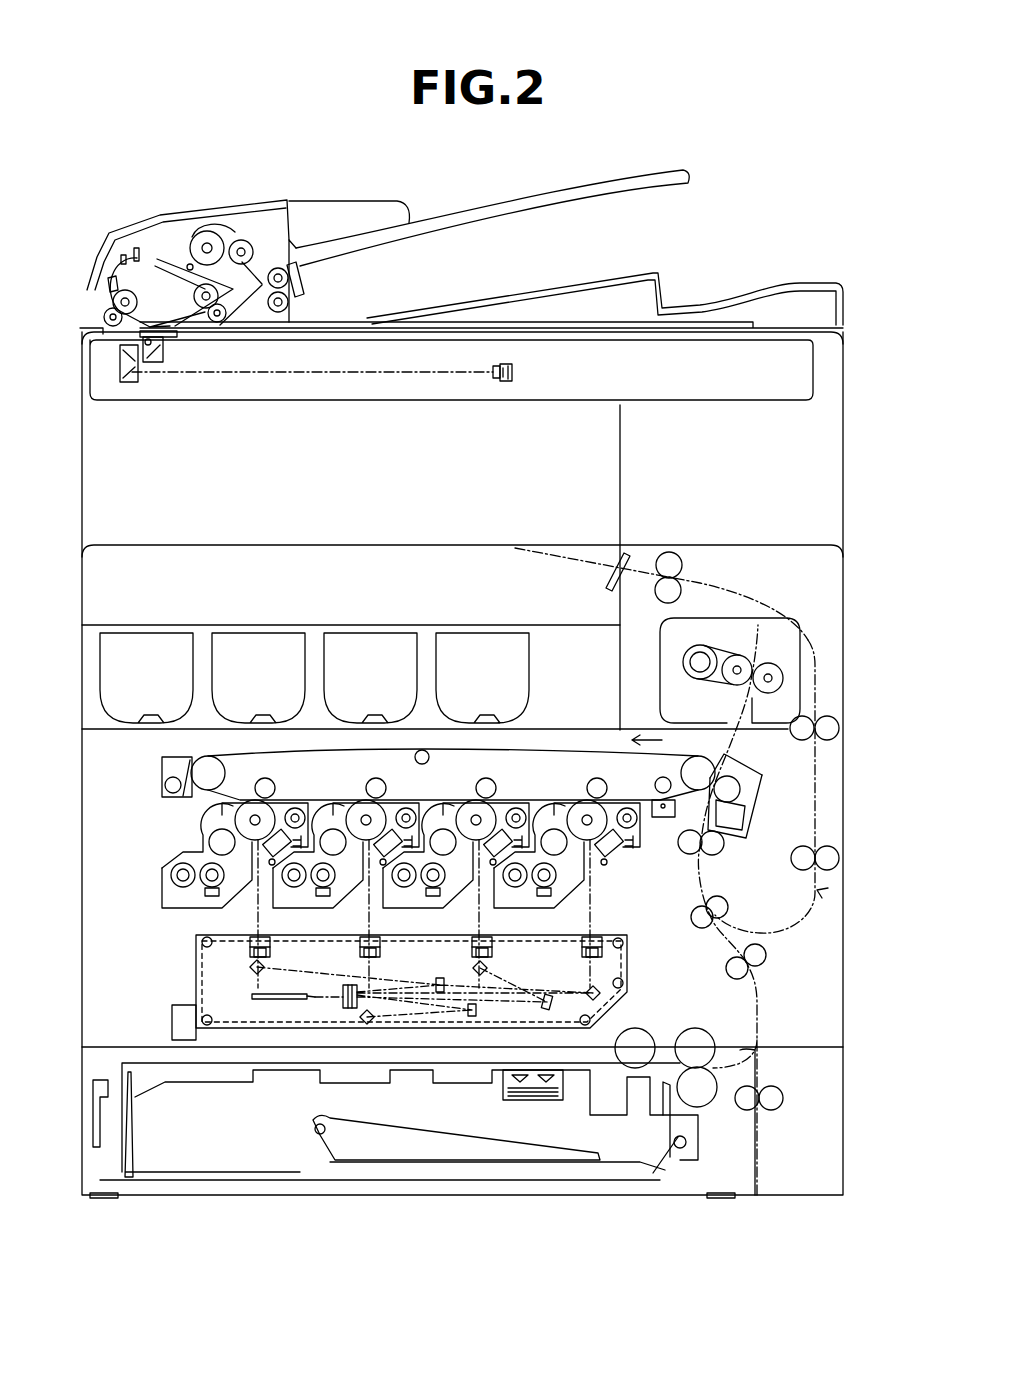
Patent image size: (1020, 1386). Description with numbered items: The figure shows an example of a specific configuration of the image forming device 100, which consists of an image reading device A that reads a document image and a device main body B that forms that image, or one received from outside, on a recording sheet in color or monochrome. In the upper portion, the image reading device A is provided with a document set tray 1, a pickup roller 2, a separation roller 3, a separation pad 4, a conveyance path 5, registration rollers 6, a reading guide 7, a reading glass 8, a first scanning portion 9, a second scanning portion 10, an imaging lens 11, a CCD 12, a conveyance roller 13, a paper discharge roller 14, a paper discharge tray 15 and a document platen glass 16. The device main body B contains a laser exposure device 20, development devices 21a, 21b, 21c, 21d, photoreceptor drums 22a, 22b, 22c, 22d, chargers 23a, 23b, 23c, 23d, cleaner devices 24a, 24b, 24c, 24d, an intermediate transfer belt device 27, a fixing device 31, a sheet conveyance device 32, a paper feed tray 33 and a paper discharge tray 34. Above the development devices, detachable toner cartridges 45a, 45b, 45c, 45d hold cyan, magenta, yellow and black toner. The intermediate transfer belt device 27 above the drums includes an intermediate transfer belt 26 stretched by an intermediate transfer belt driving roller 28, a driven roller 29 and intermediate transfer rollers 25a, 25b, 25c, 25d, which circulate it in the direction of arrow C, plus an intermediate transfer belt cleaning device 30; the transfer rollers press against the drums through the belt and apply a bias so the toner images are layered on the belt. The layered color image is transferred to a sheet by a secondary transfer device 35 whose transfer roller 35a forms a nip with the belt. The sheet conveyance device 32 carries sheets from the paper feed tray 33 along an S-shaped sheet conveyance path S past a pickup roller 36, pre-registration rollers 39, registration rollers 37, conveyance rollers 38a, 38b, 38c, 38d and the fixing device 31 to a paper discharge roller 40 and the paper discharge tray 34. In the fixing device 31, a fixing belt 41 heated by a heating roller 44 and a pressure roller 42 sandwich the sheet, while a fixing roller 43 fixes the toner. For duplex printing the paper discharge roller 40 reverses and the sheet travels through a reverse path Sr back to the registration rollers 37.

The document set tray 1 is at (510, 200).
The pickup roller 2 is at (222, 232).
The separation roller 3 is at (195, 235).
The separation pad 4 is at (212, 308).
The conveyance path 5 is at (102, 262).
The registration rollers 6 is at (97, 300).
The reading guide 7 is at (136, 323).
The reading glass 8 is at (163, 363).
The first scanning portion 9 is at (152, 363).
The second scanning portion 10 is at (120, 363).
The imaging lens 11 is at (496, 380).
The CCD 12 is at (506, 381).
The conveyance roller 13 is at (217, 323).
The paper discharge roller 14 is at (245, 240).
The paper discharge tray 15 is at (628, 275).
The document platen glass 16 is at (555, 326).
The laser exposure device 20 is at (628, 968).
The development device 21a is at (590, 871).
The development device 21b is at (479, 871).
The development device 21c is at (371, 871).
The development device 21d is at (227, 871).
The photoreceptor drum 22a is at (589, 800).
The photoreceptor drum 22b is at (478, 800).
The photoreceptor drum 22c is at (370, 800).
The photoreceptor drum 22d is at (238, 815).
The charger 23a is at (600, 860).
The charger 23b is at (473, 885).
The charger 23c is at (363, 885).
The charger 23d is at (252, 885).
The cleaner device 24a is at (632, 828).
The cleaner device 24b is at (519, 808).
The cleaner device 24c is at (409, 808).
The cleaner device 24d is at (298, 808).
The intermediate transfer roller 25a is at (607, 785).
The intermediate transfer roller 25b is at (495, 785).
The intermediate transfer roller 25c is at (385, 785).
The intermediate transfer roller 25d is at (274, 784).
The intermediate transfer belt 26 is at (590, 755).
The intermediate transfer belt device 27 is at (558, 752).
The intermediate transfer belt driving roller 28 is at (712, 768).
The driven roller 29 is at (212, 768).
The intermediate transfer belt cleaning device 30 is at (163, 775).
The fixing device 31 is at (805, 645).
The sheet conveyance device 32 is at (820, 892).
The paper feed tray 33 is at (395, 1135).
The paper discharge tray 34 is at (236, 545).
The secondary transfer device 35 is at (750, 820).
The transfer roller 35a is at (740, 789).
The pickup roller 36 is at (637, 1028).
The registration rollers 37 is at (718, 843).
The conveyance roller 38a is at (693, 1028).
The conveyance roller 38b is at (762, 952).
The conveyance roller 38c is at (832, 858).
The conveyance roller 38d is at (832, 728).
The pre-registration rollers 39 is at (725, 900).
The paper discharge roller 40 is at (672, 552).
The fixing belt 41 is at (737, 655).
The pressure roller 42 is at (784, 678).
The fixing roller 43 is at (752, 665).
The heating roller 44 is at (700, 645).
The toner cartridge 45a is at (496, 633).
The toner cartridge 45b is at (384, 633).
The toner cartridge 45c is at (272, 633).
The toner cartridge 45d is at (158, 633).
The image forming device 100 is at (850, 255).
The image reading device A is at (205, 188).
The device main body B is at (862, 460).
The arrow C is at (653, 737).
The sheet conveyance path S is at (690, 898).
The reverse path Sr is at (817, 703).